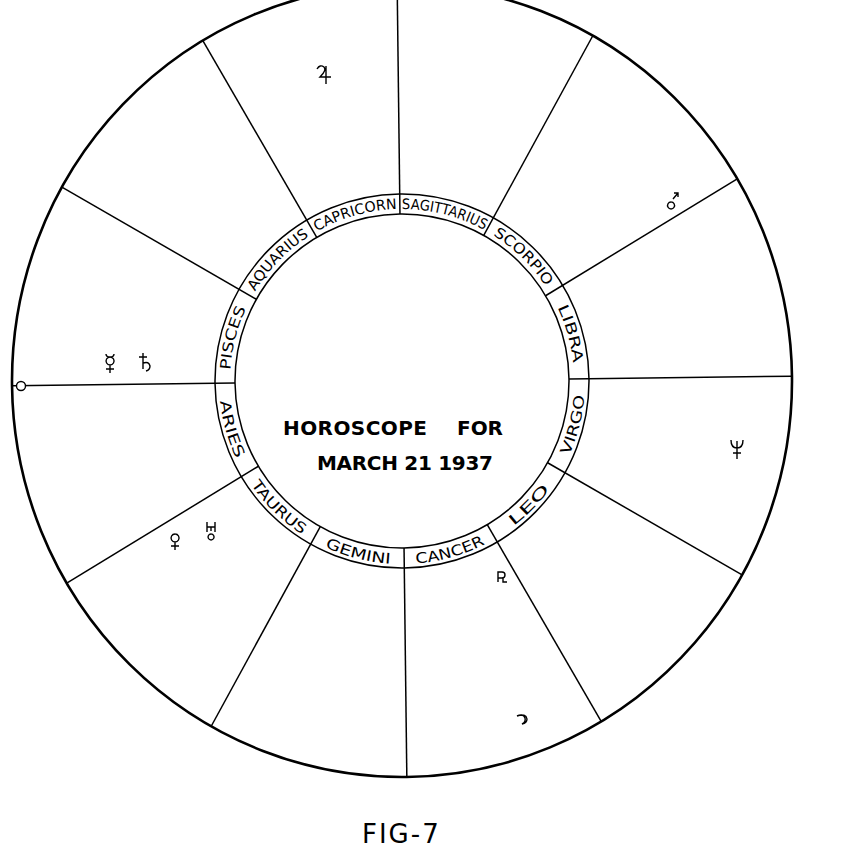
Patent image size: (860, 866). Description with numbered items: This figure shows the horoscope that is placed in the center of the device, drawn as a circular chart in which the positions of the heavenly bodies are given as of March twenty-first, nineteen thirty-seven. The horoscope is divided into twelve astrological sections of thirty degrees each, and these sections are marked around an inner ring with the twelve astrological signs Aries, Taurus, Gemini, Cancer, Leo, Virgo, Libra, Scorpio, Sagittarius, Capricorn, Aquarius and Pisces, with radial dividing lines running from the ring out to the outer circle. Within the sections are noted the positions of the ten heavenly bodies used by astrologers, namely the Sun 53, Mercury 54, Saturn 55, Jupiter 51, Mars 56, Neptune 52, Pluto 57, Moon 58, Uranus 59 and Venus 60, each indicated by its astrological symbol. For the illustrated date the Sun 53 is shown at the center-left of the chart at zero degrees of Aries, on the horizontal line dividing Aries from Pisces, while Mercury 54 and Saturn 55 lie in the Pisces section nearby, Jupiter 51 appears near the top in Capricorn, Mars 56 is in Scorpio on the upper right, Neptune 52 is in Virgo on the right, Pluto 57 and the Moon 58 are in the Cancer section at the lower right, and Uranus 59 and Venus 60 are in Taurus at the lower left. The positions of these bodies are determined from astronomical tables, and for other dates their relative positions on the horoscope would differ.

The Jupiter 51 is at (324, 66).
The Neptune 52 is at (742, 460).
The Sun 53 is at (22, 380).
The Mercury 54 is at (107, 358).
The Saturn 55 is at (151, 362).
The Mars 56 is at (672, 192).
The Pluto 57 is at (507, 586).
The Moon 58 is at (528, 722).
The Uranus 59 is at (217, 540).
The Venus 60 is at (168, 545).